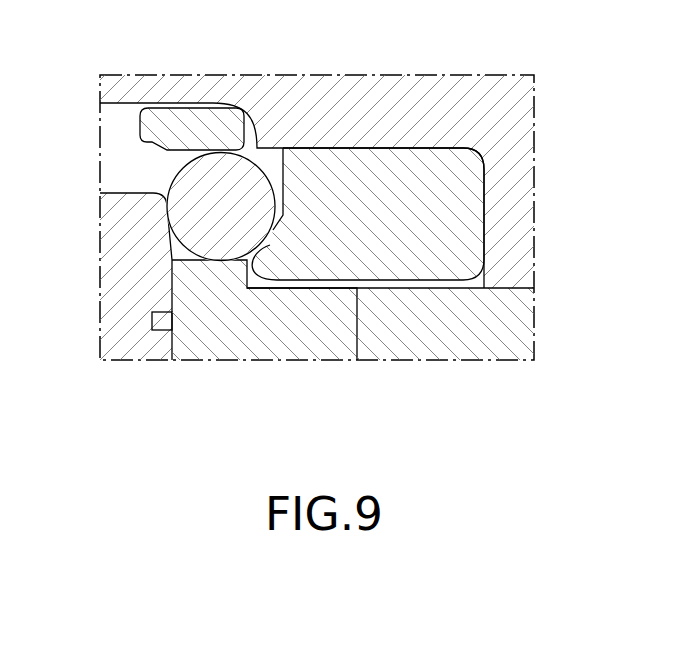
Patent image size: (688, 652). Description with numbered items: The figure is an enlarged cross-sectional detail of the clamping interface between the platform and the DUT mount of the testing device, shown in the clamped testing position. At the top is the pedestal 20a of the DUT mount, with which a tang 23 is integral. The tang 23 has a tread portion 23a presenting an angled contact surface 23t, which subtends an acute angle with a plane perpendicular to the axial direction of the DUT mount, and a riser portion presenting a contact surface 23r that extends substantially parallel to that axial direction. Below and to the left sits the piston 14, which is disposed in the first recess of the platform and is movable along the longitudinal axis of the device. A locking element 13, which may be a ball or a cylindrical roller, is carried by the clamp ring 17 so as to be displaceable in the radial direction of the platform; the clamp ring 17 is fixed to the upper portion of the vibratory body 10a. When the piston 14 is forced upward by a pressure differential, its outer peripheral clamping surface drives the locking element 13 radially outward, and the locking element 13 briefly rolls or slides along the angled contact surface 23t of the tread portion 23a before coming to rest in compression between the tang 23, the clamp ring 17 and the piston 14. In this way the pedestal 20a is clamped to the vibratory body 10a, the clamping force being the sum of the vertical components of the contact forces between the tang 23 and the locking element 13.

The locking element 13 is at (253, 193).
The piston 14 is at (115, 297).
The clamp ring 17 is at (200, 333).
The pedestal 20a is at (453, 97).
The tang 23 is at (419, 210).
The contact surface 23r is at (332, 177).
The tread portion 23a is at (375, 250).
The contact surface 23t is at (275, 178).
The vibratory body 10a is at (473, 333).